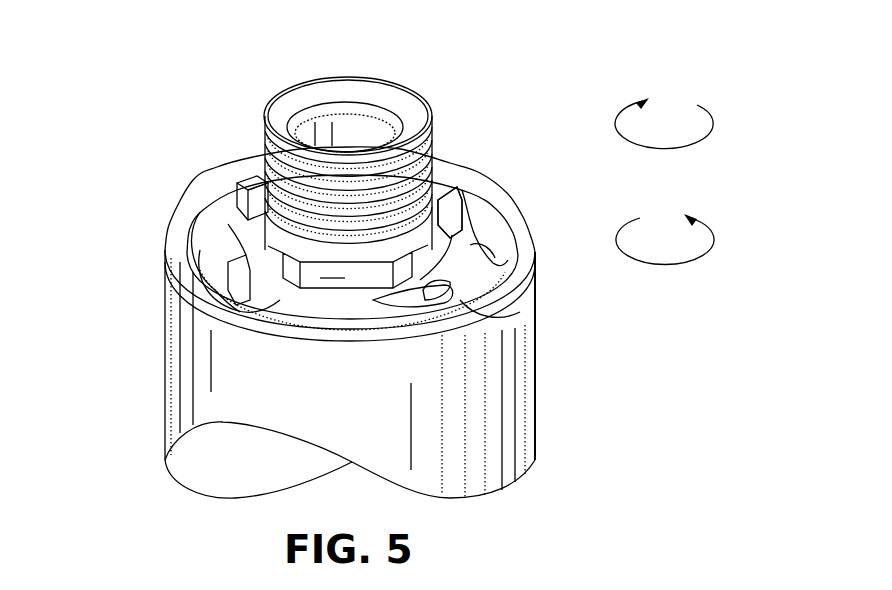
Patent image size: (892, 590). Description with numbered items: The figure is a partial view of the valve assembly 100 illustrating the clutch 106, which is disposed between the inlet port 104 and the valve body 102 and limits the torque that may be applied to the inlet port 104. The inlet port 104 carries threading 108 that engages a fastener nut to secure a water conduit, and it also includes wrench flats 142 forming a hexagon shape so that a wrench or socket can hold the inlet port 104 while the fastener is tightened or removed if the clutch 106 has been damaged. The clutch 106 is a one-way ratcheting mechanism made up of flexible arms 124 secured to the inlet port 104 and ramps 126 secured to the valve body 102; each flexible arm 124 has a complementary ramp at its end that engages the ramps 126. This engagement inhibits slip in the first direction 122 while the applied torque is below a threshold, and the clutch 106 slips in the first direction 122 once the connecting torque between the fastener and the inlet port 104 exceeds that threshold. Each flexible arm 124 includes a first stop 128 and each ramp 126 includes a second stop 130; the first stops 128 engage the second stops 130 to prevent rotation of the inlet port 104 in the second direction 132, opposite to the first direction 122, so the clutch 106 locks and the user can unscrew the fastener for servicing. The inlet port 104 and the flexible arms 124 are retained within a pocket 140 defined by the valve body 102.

The valve assembly 100 is at (580, 48).
The valve body 102 is at (535, 344).
The inlet port 104 is at (303, 84).
The clutch 106 is at (186, 206).
The threading 108 is at (448, 172).
The first direction 122 is at (713, 125).
The flexible arms 124 is at (256, 176).
The ramps 126 is at (228, 180).
The first stop 128 is at (413, 140).
The second stop 130 is at (484, 252).
The second direction 132 is at (713, 242).
The pocket 140 is at (486, 258).
The wrench flats 142 is at (345, 277).